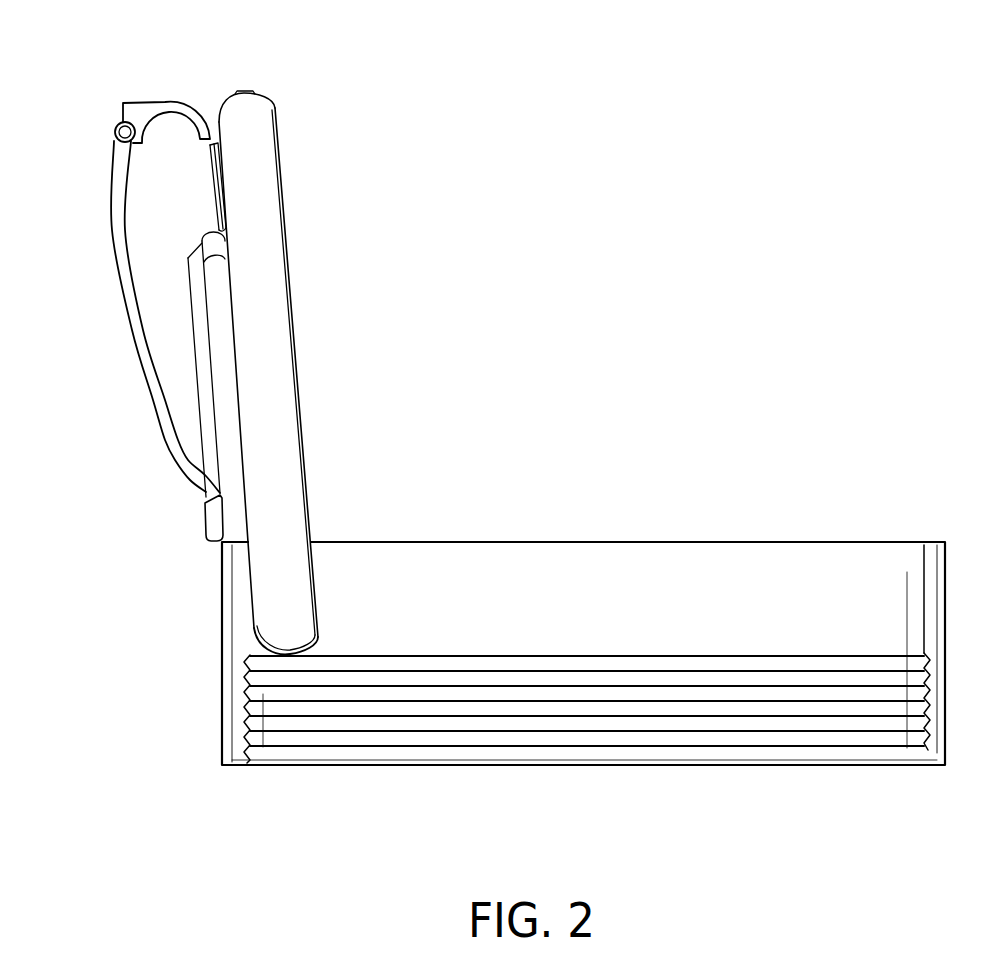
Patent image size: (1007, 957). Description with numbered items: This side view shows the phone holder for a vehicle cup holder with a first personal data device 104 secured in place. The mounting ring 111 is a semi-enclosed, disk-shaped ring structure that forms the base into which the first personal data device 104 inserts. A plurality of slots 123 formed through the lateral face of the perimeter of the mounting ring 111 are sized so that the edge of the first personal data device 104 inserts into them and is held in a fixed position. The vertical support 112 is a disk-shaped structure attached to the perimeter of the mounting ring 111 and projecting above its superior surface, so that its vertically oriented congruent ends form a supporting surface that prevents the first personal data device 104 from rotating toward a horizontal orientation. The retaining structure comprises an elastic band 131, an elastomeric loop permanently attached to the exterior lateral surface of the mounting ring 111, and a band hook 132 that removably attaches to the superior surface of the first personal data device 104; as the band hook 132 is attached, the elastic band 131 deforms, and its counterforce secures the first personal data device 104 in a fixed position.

The first personal data device 104 is at (270, 387).
The mounting ring 111 is at (815, 568).
The vertical support 112 is at (200, 347).
The plurality of slots 123 is at (253, 610).
The elastic band 131 is at (140, 333).
The band hook 132 is at (147, 110).